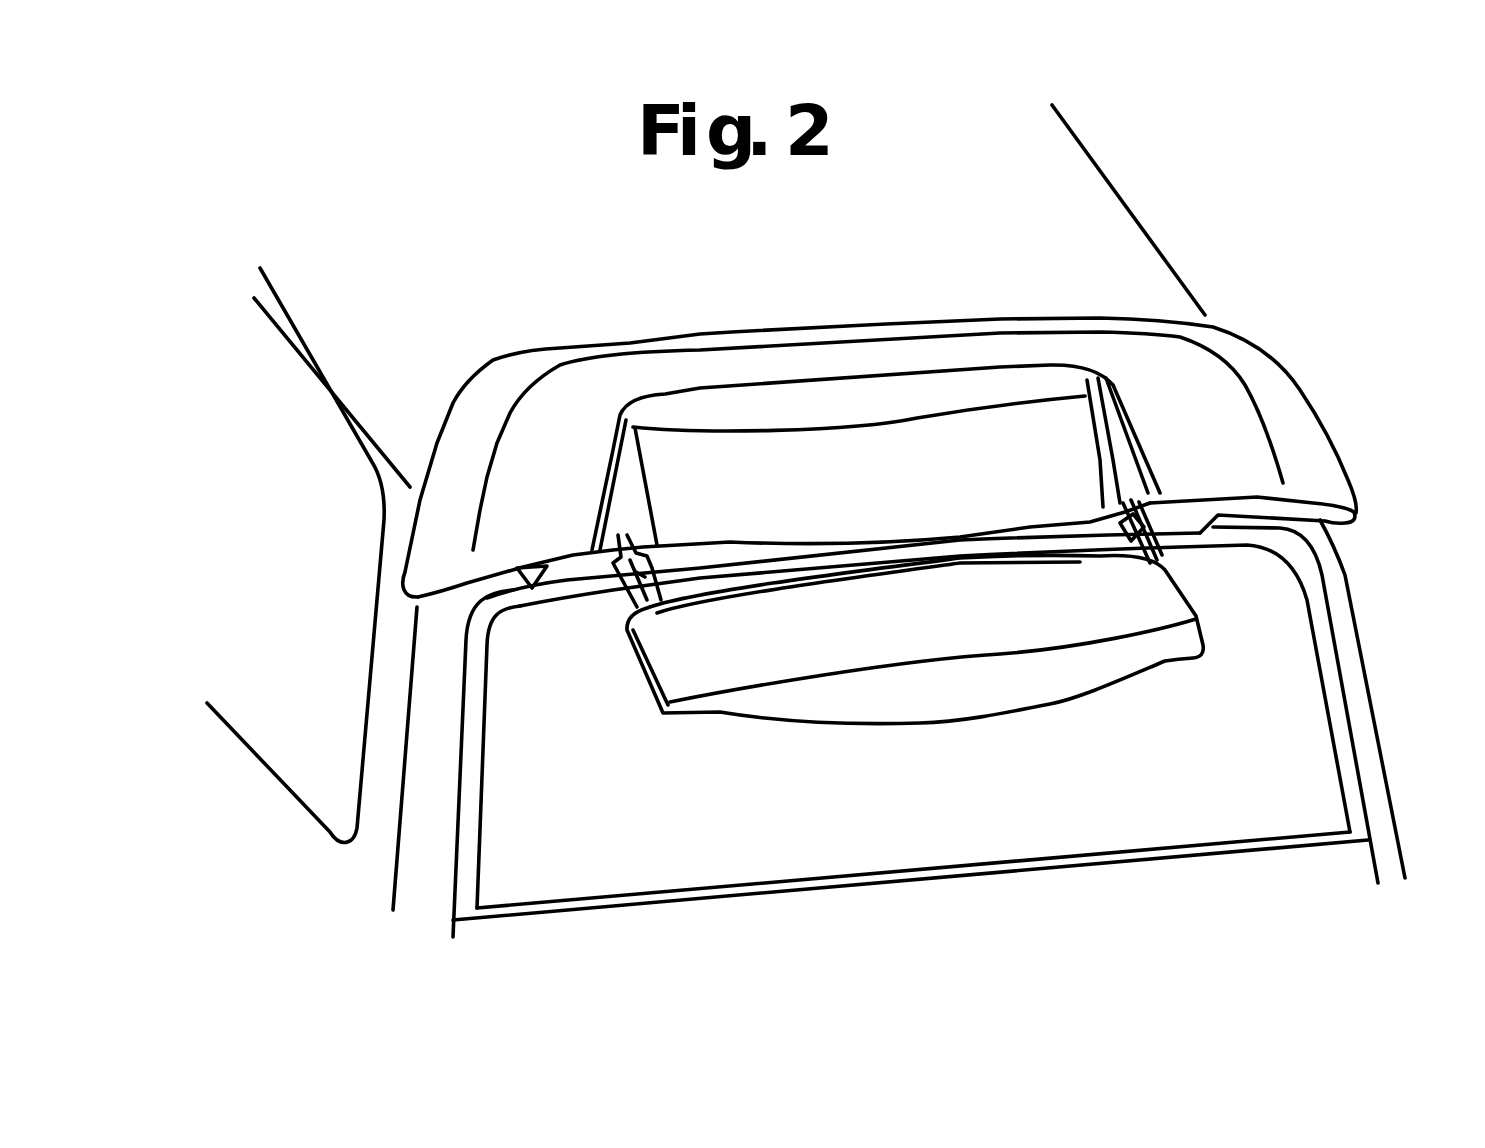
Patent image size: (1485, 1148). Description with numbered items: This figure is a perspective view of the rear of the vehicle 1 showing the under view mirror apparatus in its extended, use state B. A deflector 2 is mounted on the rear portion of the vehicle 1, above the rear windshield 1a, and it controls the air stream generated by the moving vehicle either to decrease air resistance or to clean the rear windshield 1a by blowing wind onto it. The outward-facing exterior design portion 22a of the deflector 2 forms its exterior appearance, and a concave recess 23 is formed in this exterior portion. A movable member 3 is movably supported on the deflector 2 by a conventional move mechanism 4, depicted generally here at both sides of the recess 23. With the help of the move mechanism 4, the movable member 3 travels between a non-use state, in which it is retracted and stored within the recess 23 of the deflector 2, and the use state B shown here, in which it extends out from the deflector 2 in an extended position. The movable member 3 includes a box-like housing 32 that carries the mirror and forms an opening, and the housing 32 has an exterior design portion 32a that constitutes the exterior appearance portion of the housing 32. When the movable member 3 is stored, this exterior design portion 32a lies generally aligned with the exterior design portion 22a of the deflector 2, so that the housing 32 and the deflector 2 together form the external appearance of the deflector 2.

The vehicle 1 is at (1147, 219).
The rear windshield 1a is at (487, 847).
The deflector 2 is at (931, 469).
The exterior design portion 22a is at (577, 405).
The recess 23 is at (798, 447).
The movable member 3 is at (881, 685).
The housing 32 is at (470, 374).
The exterior design portion 32a is at (835, 657).
The move mechanism 4 is at (611, 606).
The use state B is at (655, 728).